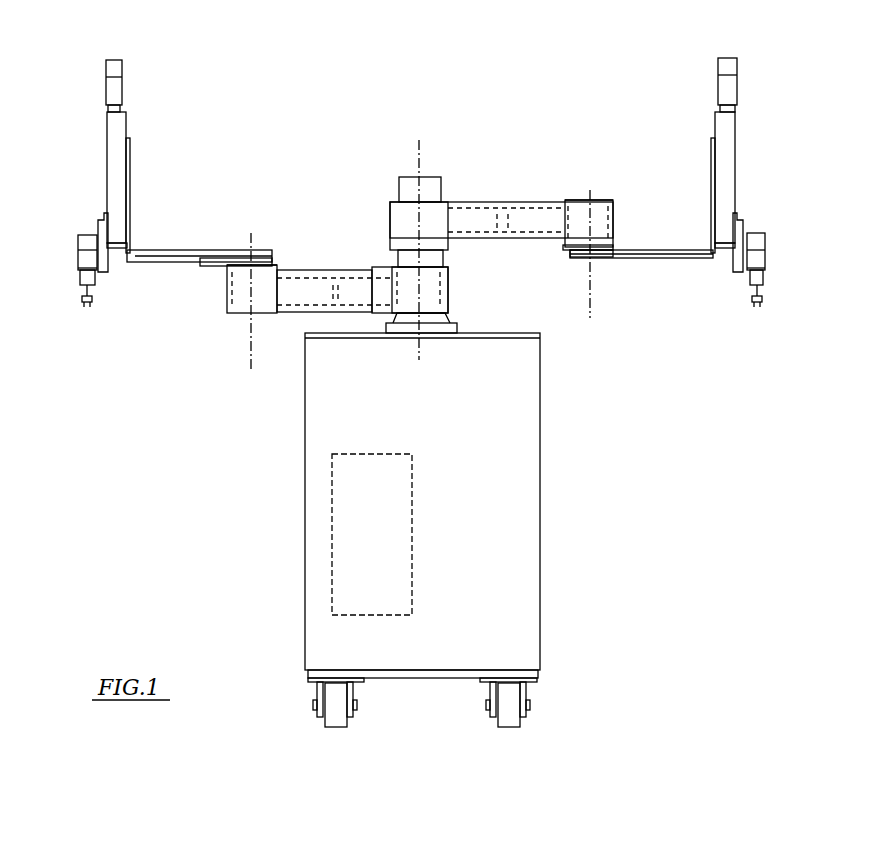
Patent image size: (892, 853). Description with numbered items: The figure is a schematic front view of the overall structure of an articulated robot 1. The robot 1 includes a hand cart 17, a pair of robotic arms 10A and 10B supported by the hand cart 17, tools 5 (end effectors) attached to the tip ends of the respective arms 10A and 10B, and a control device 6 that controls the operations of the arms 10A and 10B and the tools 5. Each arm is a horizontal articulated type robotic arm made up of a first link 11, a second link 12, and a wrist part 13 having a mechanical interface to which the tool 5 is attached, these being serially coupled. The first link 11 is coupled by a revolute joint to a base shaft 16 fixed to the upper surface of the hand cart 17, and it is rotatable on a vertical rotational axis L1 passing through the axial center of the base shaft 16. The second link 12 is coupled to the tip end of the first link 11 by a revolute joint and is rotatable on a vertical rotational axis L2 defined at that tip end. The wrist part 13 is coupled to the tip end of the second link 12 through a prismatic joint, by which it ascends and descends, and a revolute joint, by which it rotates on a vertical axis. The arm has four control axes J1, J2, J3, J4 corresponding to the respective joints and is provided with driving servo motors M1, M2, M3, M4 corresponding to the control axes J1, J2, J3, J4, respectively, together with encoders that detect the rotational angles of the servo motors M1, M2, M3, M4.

The robot 1 is at (392, 95).
The tool 5 is at (86, 305).
The control device 6 is at (332, 540).
The robotic arm 10A is at (598, 170).
The robotic arm 10B is at (206, 172).
The first link 11 is at (533, 200).
The second link 12 is at (163, 264).
The wrist part 13 is at (94, 222).
The base shaft 16 is at (445, 258).
The hand cart 17 is at (541, 482).
The control axis J1 is at (392, 208).
The control axis J2 is at (616, 215).
The control axis J3 is at (110, 156).
The control axis J4 is at (86, 290).
The vertical rotational axis L1 is at (418, 239).
The vertical rotational axis L2 is at (420, 297).
The servo motor M1 is at (470, 198).
The servo motor M2 is at (547, 196).
The servo motor M3 is at (106, 70).
The servo motor M4 is at (78, 258).